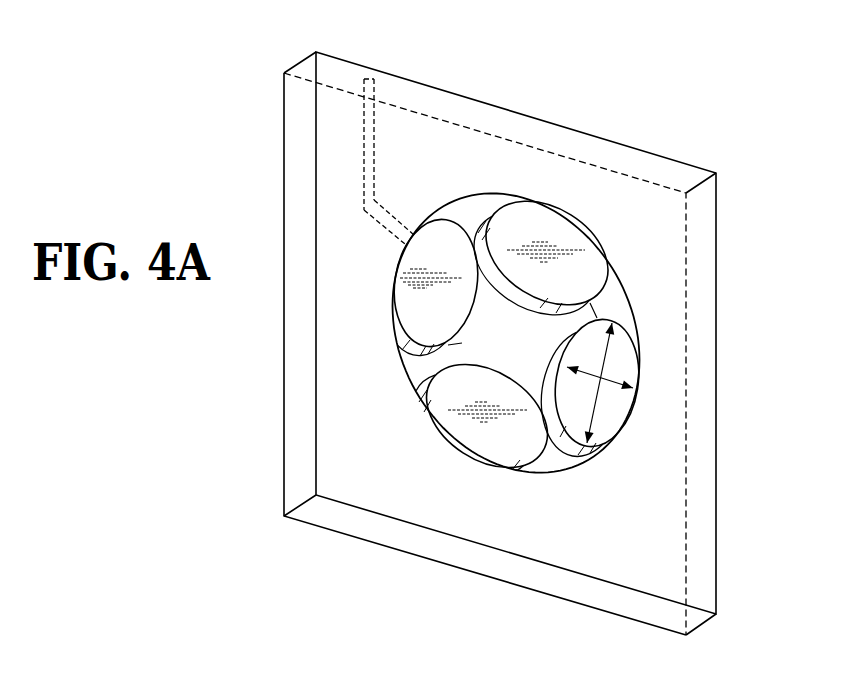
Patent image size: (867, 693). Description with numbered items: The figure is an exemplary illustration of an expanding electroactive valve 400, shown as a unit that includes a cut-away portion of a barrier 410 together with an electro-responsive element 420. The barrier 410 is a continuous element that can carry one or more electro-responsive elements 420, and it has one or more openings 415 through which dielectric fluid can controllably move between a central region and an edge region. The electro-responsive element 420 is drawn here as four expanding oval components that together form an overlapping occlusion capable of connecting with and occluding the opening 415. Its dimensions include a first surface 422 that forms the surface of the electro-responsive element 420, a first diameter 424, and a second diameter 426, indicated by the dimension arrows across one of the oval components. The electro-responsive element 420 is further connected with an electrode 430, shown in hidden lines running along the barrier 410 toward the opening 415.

The electroactive valve 400 is at (705, 95).
The barrier 410 is at (670, 255).
The opening 415 is at (462, 348).
The electro-responsive element 420 is at (415, 298).
The first surface 422 is at (622, 371).
The first diameter 424 is at (603, 433).
The second diameter 426 is at (604, 352).
The electrode 430 is at (364, 147).